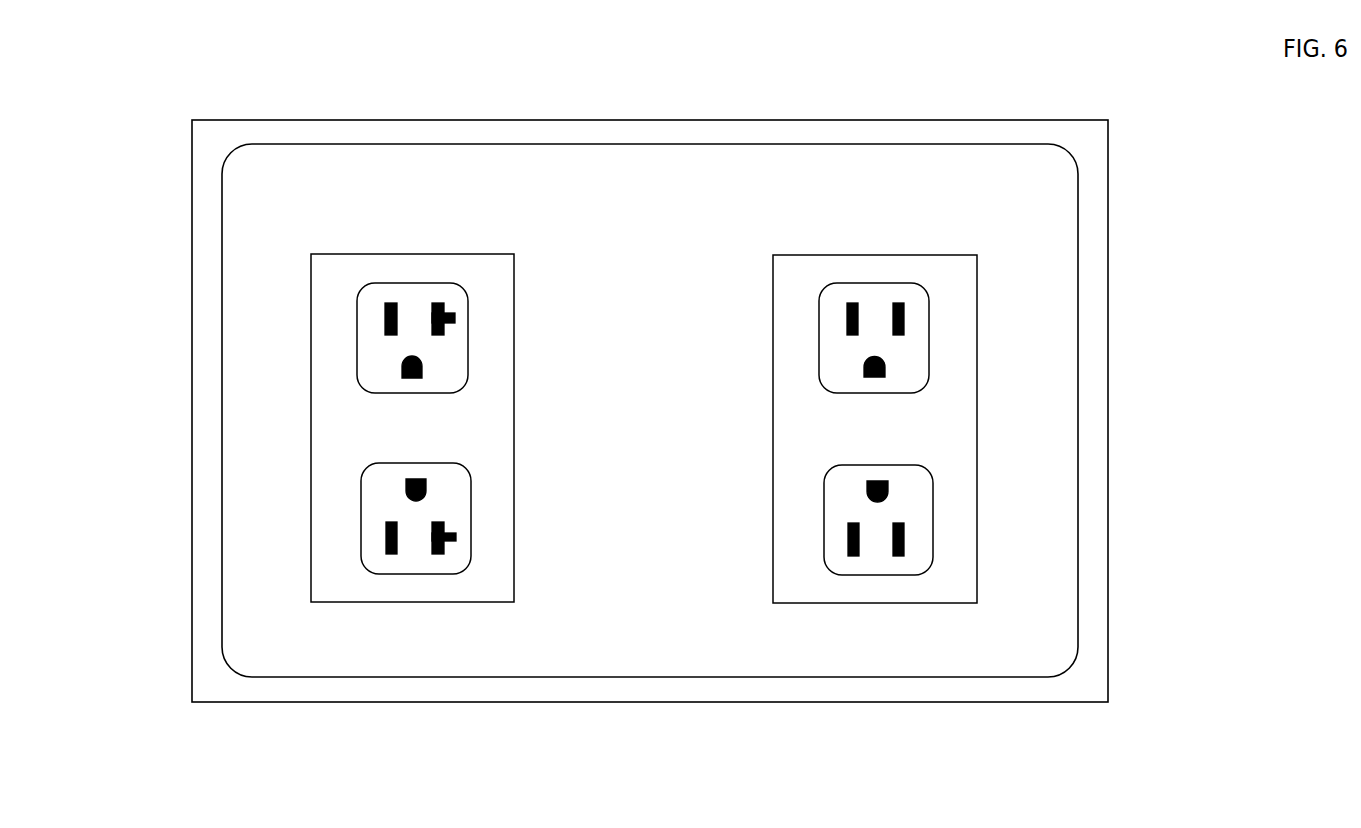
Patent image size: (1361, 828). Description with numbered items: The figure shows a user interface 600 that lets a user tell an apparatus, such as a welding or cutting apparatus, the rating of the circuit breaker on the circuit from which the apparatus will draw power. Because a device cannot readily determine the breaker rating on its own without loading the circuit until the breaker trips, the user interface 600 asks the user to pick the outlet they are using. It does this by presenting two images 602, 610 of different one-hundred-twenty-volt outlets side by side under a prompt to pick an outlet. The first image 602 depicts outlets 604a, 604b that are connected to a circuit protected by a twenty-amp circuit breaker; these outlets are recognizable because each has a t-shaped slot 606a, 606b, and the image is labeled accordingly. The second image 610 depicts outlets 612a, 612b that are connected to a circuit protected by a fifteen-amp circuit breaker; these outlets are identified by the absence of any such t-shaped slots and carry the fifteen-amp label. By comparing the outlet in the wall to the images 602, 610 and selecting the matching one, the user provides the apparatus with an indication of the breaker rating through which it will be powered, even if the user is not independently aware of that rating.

The user interface 600 is at (98, 78).
The image 602 is at (514, 297).
The outlet 604a is at (357, 333).
The outlet 604b is at (473, 502).
The t-shaped slot 606a is at (443, 307).
The t-shaped slot 606b is at (456, 538).
The image 610 is at (773, 280).
The outlet 612a is at (929, 328).
The outlet 612b is at (820, 548).